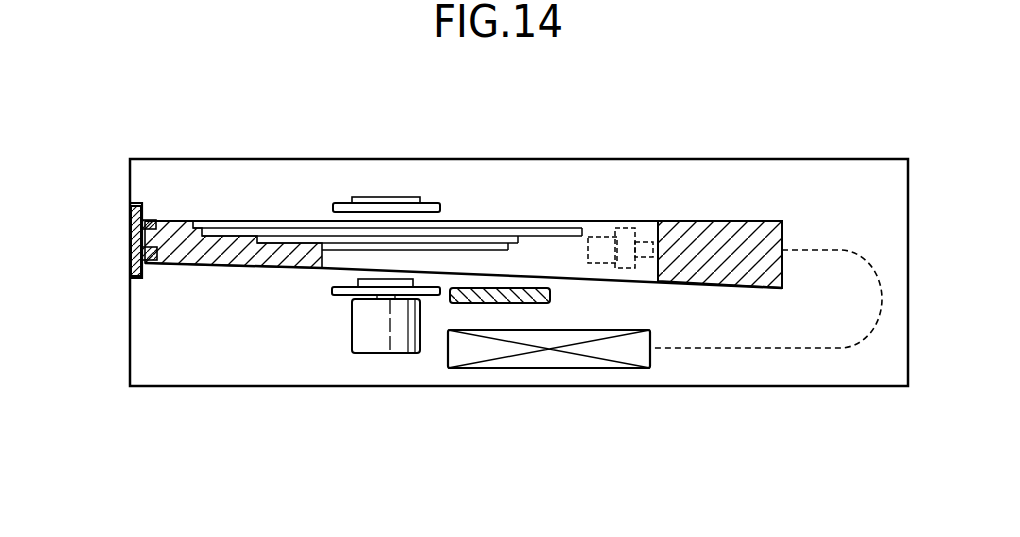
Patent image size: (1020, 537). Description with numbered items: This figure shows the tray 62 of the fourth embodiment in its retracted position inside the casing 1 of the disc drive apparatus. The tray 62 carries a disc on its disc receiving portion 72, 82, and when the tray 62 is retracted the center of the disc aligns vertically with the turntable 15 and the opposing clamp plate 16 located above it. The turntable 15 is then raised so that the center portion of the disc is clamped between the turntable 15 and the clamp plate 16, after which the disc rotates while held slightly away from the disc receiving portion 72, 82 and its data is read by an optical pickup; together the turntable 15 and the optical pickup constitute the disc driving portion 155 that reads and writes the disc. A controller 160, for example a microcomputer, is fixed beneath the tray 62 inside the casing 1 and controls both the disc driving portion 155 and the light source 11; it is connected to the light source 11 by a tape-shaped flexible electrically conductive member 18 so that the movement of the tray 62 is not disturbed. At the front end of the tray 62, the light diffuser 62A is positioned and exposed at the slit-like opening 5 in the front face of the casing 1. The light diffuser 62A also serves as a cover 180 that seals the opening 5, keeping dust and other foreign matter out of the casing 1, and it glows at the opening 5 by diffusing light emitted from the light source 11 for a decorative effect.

The casing 1 is at (218, 159).
The opening 5 is at (121, 201).
The light diffuser 62A is at (130, 242).
The cover 180 is at (130, 267).
The tray 62 is at (463, 190).
The disc receiving portion 72 is at (387, 171).
The laminated layer 82 is at (477, 221).
The light source 11 is at (625, 228).
The clamp plate 16 is at (382, 197).
The turntable 15 is at (331, 292).
The disc driving portion 155 is at (432, 358).
The controller 160 is at (588, 368).
The flexible electrically conductive member 18 is at (757, 348).